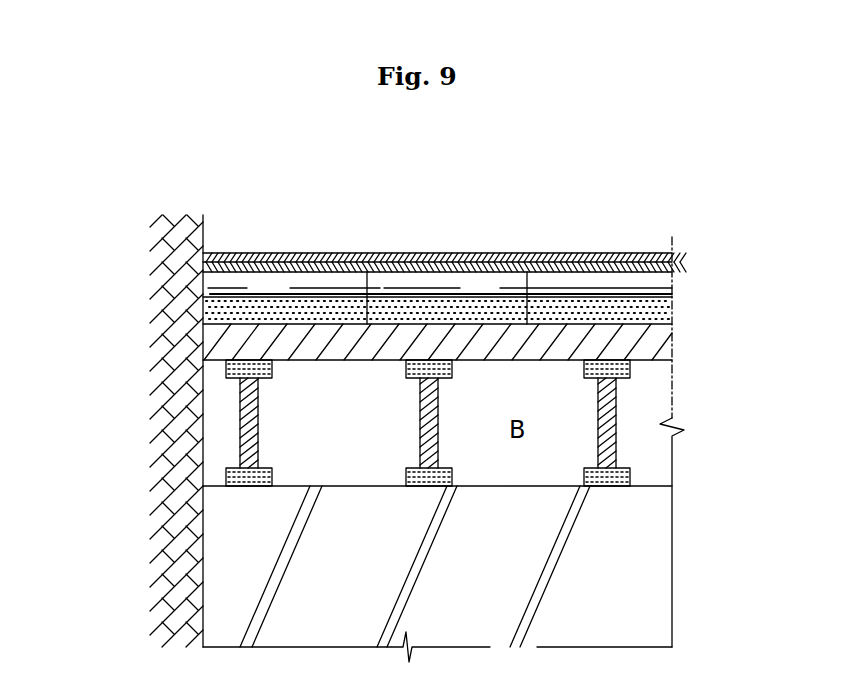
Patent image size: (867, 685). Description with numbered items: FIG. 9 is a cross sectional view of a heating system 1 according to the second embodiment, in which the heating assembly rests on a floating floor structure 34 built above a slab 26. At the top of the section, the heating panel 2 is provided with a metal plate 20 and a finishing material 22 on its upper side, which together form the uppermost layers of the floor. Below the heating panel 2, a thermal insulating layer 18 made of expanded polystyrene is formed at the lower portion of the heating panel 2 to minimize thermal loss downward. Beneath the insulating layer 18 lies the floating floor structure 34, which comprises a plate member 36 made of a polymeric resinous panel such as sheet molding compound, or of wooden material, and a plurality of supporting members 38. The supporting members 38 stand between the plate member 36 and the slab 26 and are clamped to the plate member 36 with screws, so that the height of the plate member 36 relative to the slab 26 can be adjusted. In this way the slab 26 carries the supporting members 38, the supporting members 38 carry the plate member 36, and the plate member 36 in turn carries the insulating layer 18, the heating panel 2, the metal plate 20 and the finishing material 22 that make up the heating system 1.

The heating system 1 is at (681, 223).
The heating panel 2 is at (653, 282).
The thermal insulating layer 18 is at (213, 320).
The metal plate 20 is at (457, 253).
The finishing material 22 is at (362, 253).
The slab 26 is at (645, 587).
The floating floor structure 34 is at (357, 423).
The plate member 36 is at (648, 345).
The supporting members 38 is at (236, 432).